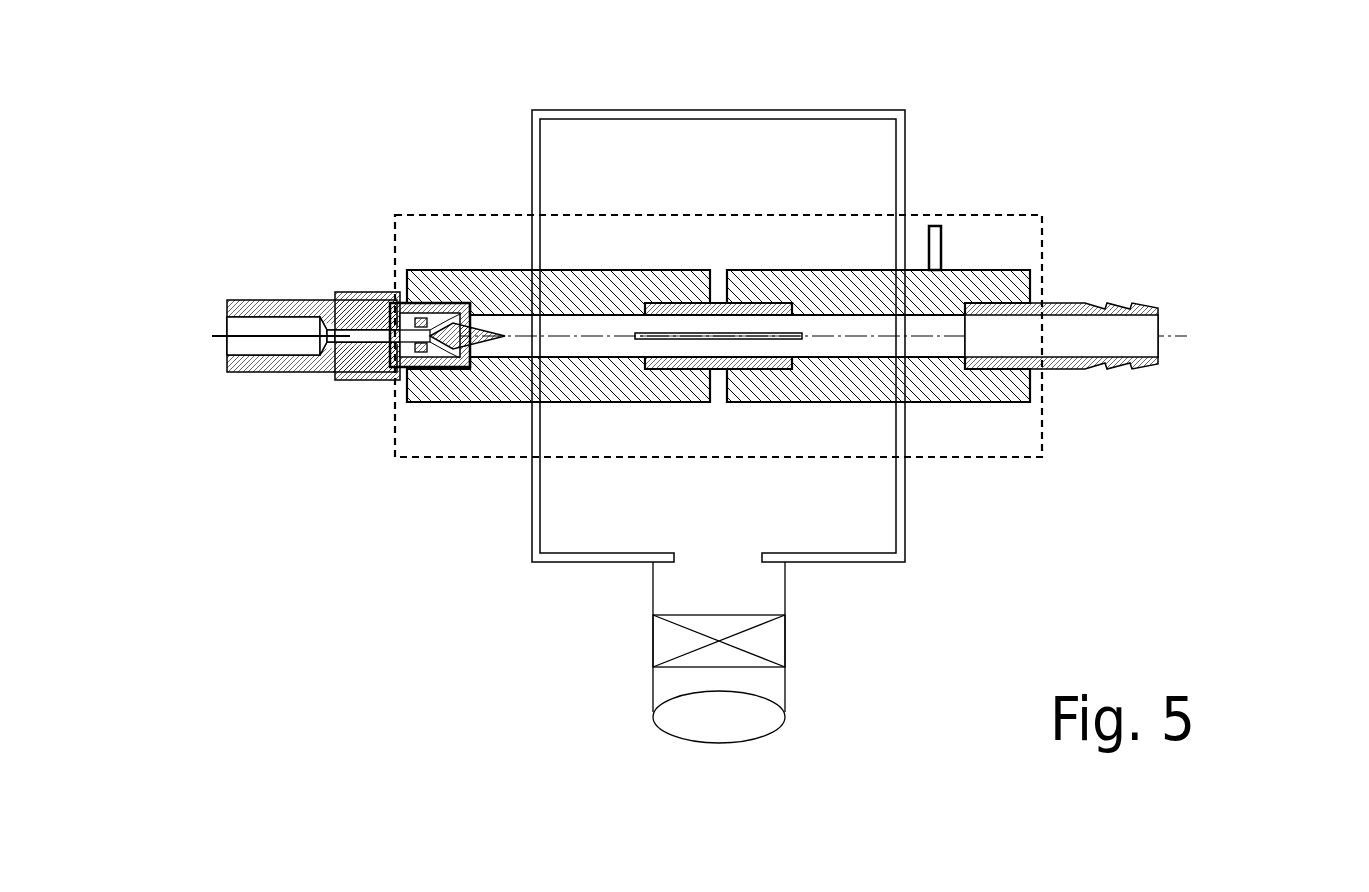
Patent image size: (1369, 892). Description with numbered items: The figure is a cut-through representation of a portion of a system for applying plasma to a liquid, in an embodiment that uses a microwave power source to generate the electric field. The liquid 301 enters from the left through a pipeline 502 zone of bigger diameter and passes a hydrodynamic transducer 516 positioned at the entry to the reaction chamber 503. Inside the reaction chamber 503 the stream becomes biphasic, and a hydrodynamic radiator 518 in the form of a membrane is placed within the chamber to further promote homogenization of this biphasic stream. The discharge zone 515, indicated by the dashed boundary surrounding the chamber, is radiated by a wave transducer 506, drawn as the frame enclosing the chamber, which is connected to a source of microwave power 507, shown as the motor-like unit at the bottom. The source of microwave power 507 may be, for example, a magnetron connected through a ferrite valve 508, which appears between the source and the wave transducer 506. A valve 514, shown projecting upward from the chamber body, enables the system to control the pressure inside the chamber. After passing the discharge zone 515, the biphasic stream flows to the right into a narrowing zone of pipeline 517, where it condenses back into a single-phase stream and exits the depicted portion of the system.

The liquid 301 is at (256, 336).
The pipeline 502 is at (308, 300).
The reaction chamber 503 is at (663, 270).
The wave transducer 506 is at (905, 470).
The source of microwave power 507 is at (770, 735).
The ferrite valve 508 is at (785, 655).
The valve 514 is at (940, 228).
The discharge zone 515 is at (1042, 215).
The hydrodynamic transducer 516 is at (455, 315).
The narrowing zone of pipeline 517 is at (1117, 303).
The hydrodynamic radiator 518 is at (678, 340).